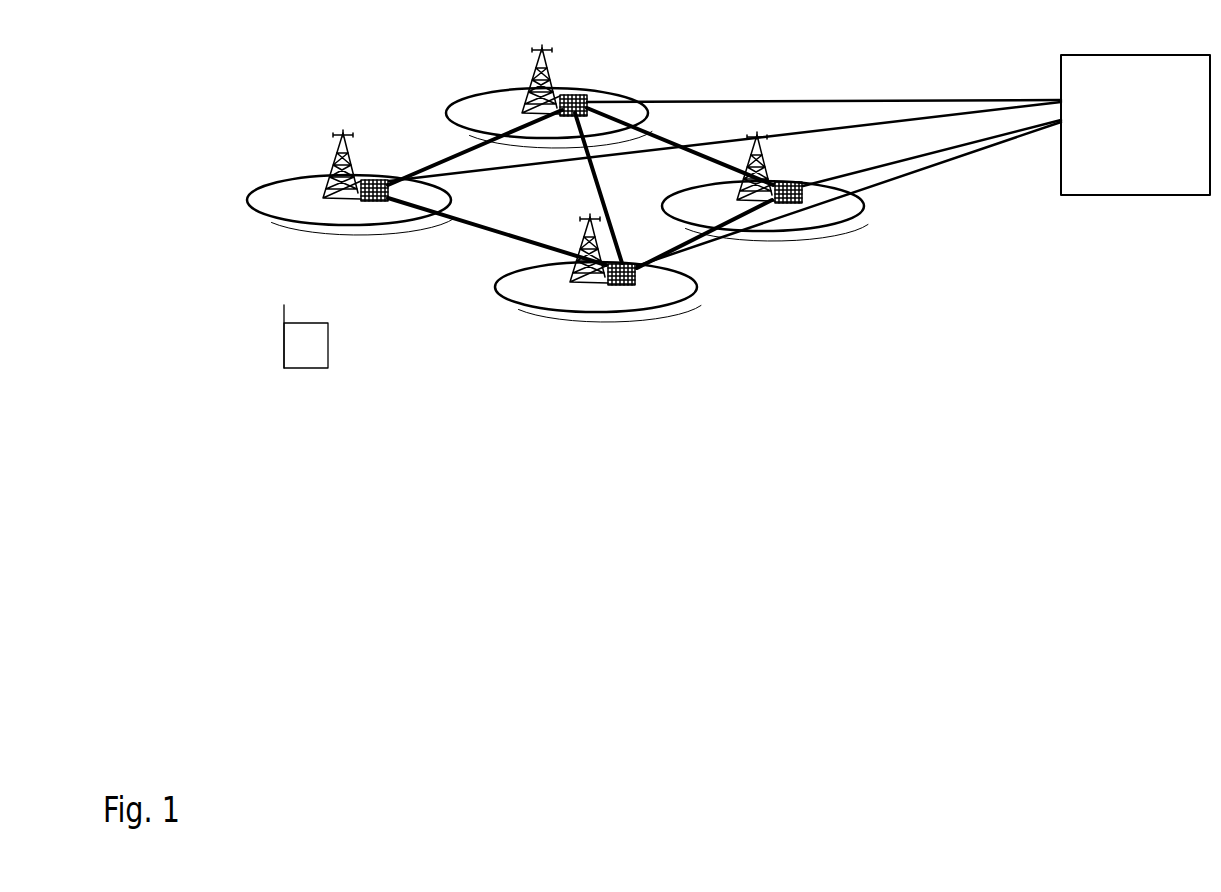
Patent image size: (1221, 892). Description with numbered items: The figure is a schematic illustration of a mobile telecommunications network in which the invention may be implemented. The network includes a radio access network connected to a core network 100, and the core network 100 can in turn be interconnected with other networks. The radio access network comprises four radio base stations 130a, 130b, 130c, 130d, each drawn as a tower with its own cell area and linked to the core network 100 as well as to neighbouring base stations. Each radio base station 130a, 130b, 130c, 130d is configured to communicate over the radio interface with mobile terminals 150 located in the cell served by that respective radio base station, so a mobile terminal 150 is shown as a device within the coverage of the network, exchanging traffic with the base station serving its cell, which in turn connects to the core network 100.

The core network 100 is at (1135, 125).
The radio base station 130a is at (277, 182).
The radio base station 130b is at (685, 265).
The radio base station 130c is at (947, 204).
The radio base station 130d is at (517, 63).
The mobile terminal 150 is at (272, 358).